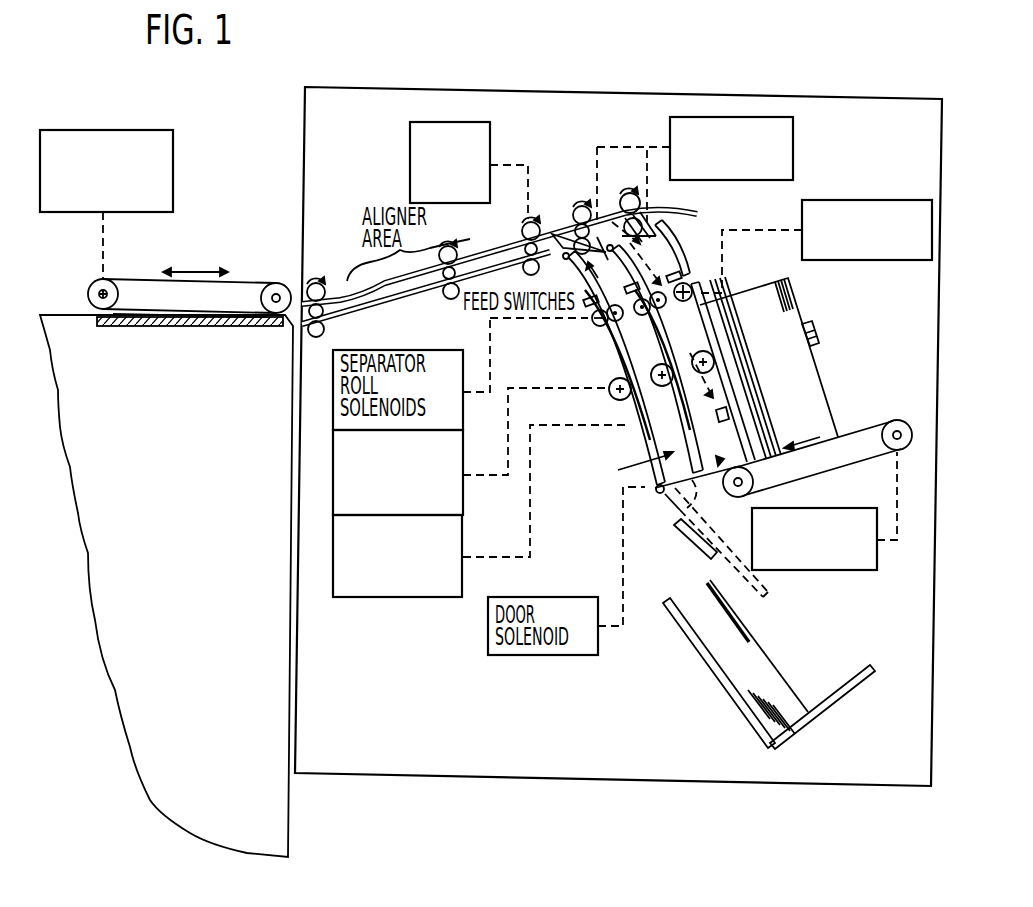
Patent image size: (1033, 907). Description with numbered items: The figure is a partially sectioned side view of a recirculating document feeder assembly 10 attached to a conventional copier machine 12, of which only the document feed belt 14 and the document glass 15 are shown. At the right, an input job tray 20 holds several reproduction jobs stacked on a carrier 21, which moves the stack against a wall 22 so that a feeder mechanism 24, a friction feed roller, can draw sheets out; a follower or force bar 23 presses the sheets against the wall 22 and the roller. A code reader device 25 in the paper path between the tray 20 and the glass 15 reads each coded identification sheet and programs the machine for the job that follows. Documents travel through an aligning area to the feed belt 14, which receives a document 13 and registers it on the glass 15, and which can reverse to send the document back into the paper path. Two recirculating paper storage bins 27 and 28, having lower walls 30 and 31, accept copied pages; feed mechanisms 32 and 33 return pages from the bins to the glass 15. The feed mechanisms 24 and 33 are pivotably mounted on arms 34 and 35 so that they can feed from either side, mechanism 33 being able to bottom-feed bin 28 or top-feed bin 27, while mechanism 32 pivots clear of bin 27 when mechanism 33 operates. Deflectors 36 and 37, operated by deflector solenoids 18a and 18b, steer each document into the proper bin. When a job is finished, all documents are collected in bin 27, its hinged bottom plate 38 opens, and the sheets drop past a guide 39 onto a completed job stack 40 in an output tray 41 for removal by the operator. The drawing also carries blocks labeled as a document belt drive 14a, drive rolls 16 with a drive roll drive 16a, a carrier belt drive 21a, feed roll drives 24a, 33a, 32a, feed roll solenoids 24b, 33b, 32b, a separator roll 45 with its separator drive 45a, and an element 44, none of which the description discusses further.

The feeder assembly 10 is at (584, 90).
The copier machine 12 is at (181, 507).
The document 13 is at (122, 324).
The document feed belt 14 is at (238, 282).
The document belt drive 14a is at (106, 205).
The document glass 15 is at (207, 327).
The drive rolls 16 is at (518, 236).
The drive roll drive 16a is at (453, 122).
The deflector solenoid 18a is at (736, 169).
The deflector solenoid 18b is at (793, 157).
The input job tray 20 is at (823, 378).
The carrier 21 is at (828, 473).
The carrier belt drive 21a is at (810, 569).
The wall 22 is at (680, 245).
The follower or force bar 23 is at (815, 333).
The feeder mechanism 24 is at (714, 361).
The feed roll drive 24a is at (471, 451).
The feed roll solenoid 24b is at (481, 511).
The code reader device 25 is at (655, 235).
The paper storage bin 27 is at (669, 470).
The paper storage bin 28 is at (697, 494).
The lower wall 30 is at (612, 339).
The lower wall 31 is at (693, 443).
The feed mechanism 32 is at (611, 393).
The feed roll drive 32a is at (471, 451).
The feed roll solenoid 32b is at (481, 511).
The feed mechanism 33 is at (651, 373).
The feed roll drive 33a is at (471, 451).
The feed roll solenoid 33b is at (481, 511).
The arm 34 is at (708, 386).
The arm 35 is at (668, 400).
The deflector 36 is at (600, 242).
The deflector 37 is at (648, 210).
The hinged bottom plate 38 is at (662, 498).
The guide 39 is at (700, 546).
The completed job stack 40 is at (784, 683).
The output tray 41 is at (808, 721).
The separator block 44 is at (727, 416).
The separator roll 45 is at (702, 286).
The separator drive 45a is at (816, 246).